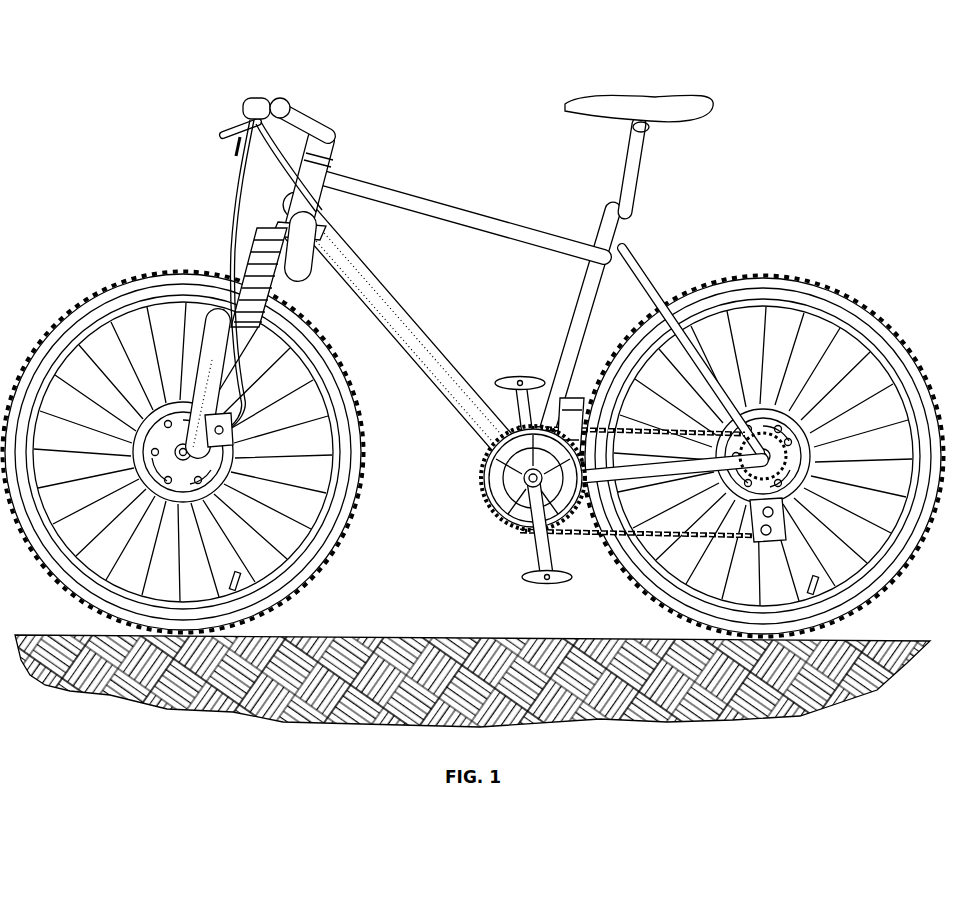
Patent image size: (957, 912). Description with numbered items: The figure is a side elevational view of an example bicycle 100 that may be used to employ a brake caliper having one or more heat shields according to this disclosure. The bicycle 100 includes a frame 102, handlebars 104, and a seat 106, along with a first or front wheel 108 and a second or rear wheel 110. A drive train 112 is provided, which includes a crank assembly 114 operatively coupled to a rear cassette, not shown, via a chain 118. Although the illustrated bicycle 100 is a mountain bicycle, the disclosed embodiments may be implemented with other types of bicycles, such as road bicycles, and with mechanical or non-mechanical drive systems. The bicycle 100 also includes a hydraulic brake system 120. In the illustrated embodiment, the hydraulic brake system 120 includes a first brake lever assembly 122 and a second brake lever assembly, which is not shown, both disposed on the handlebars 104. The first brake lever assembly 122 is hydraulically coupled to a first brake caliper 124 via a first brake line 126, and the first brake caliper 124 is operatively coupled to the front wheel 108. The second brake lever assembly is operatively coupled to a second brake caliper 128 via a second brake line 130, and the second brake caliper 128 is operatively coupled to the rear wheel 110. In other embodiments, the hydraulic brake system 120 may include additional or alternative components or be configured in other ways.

The bicycle 100 is at (803, 126).
The frame 102 is at (487, 221).
The handlebars 104 is at (284, 99).
The seat 106 is at (661, 100).
The front wheel 108 is at (78, 320).
The rear wheel 110 is at (860, 313).
The drive train 112 is at (486, 521).
The crank assembly 114 is at (528, 547).
The chain 118 is at (484, 488).
The hydraulic brake system 120 is at (236, 153).
The first brake lever assembly 122 is at (237, 127).
The first brake caliper 124 is at (233, 427).
The first brake line 126 is at (249, 227).
The second brake caliper 128 is at (733, 408).
The second brake line 130 is at (283, 188).